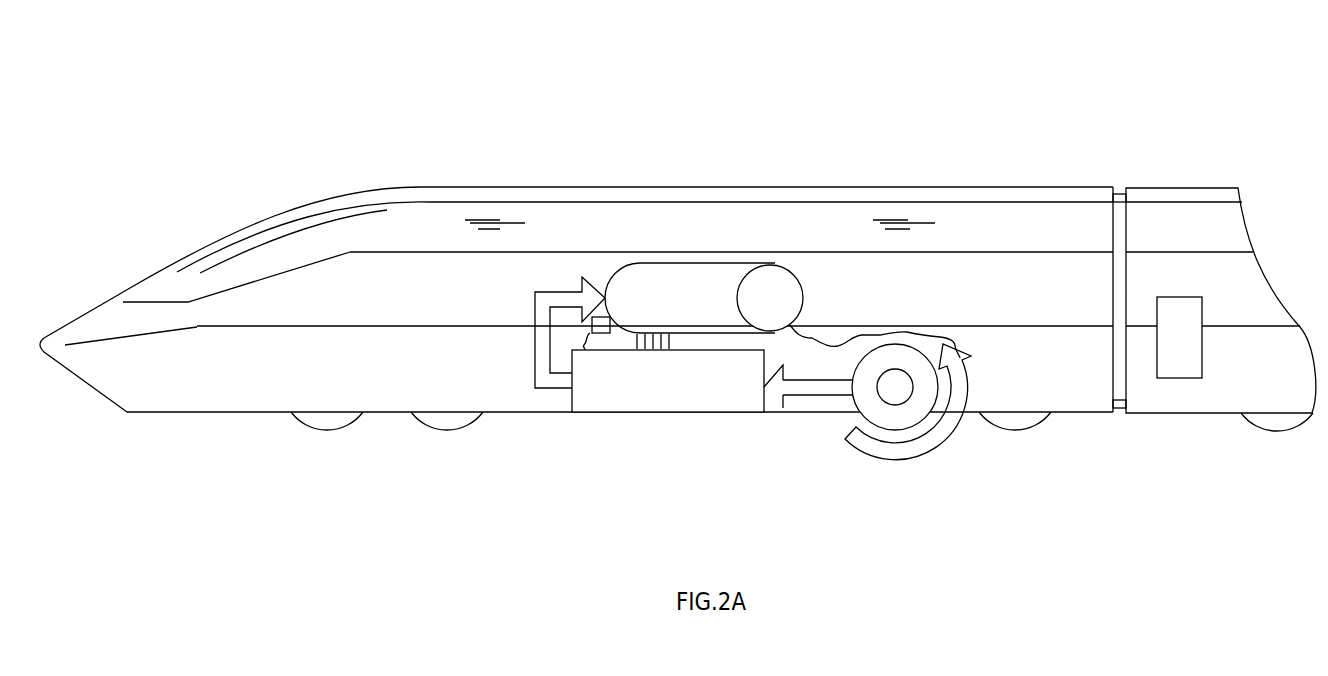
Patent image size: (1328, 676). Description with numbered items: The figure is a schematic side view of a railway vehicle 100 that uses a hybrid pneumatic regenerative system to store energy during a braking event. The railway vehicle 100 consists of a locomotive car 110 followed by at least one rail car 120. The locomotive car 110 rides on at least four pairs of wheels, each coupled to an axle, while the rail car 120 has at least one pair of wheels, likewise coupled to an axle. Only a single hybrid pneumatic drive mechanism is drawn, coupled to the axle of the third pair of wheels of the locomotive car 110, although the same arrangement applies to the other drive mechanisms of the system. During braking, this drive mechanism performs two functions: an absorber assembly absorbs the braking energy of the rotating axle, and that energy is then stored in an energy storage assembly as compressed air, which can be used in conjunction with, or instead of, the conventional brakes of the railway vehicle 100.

The railway vehicle 100 is at (221, 84).
The locomotive car 110 is at (262, 228).
The rail car 120 is at (1184, 188).